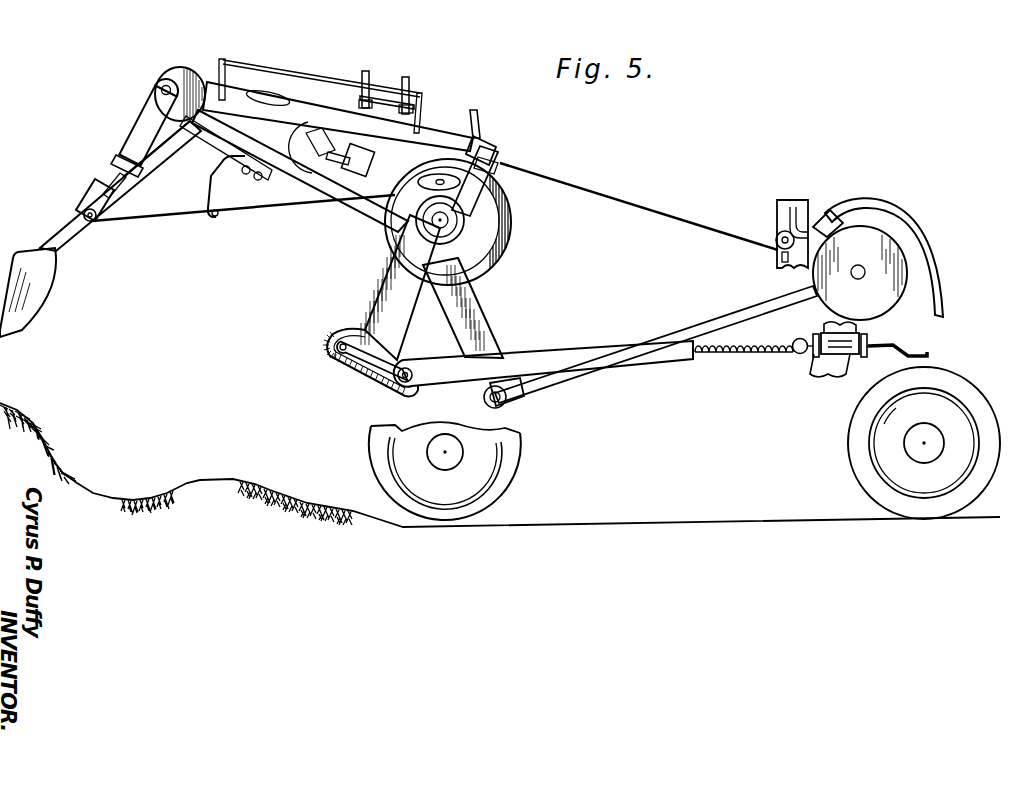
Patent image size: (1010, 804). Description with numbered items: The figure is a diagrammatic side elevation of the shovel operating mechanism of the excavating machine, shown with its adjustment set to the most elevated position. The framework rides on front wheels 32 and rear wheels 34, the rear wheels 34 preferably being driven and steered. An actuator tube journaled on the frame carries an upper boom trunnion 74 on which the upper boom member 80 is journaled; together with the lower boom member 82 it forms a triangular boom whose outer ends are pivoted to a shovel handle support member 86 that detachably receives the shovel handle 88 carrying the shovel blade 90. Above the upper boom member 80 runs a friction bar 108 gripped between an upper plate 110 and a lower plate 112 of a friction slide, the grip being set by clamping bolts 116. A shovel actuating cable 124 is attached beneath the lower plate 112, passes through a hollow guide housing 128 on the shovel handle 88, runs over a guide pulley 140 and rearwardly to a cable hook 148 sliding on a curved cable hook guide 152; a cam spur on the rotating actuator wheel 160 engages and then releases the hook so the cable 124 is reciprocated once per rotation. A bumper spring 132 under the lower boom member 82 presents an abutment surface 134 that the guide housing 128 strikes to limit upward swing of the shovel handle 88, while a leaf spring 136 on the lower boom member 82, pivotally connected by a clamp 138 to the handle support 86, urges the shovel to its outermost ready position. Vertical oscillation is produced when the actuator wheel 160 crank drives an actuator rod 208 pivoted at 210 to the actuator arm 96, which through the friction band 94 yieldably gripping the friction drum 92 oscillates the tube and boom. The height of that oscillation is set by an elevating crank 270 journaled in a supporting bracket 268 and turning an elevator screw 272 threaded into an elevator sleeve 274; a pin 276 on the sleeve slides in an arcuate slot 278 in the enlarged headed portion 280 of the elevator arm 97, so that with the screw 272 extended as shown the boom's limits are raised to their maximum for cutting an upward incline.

The front wheels 32 is at (510, 487).
The rear wheels 34 is at (867, 458).
The upper boom trunnion 74 is at (493, 185).
The upper boom member 80 is at (432, 134).
The lower boom member 82 is at (336, 206).
The shovel handle support member 86 is at (140, 122).
The shovel handle 88 is at (58, 228).
The shovel blade 90 is at (40, 290).
The friction drum 92 is at (486, 229).
The friction band 94 is at (513, 259).
The actuator arm 96 is at (486, 324).
The elevator arm 97 is at (382, 298).
The friction bar 108 is at (308, 80).
The upper plate 110 is at (377, 79).
The lower plate 112 is at (424, 99).
The clamping bolts 116 is at (411, 83).
The shovel actuating cable 124 is at (217, 222).
The guide housing 128 is at (101, 200).
The bumper spring 132 is at (214, 186).
The abutment surface 134 is at (249, 210).
The leaf spring 136 is at (168, 141).
The clamp 138 is at (118, 148).
The guide pulley 140 is at (410, 181).
The cable hook 148 is at (816, 226).
The cable hook guide 152 is at (895, 215).
The actuator wheel 160 is at (858, 233).
The actuator rod 208 is at (680, 333).
The pivoted end of actuator arm 210 is at (508, 404).
The supporting bracket 268 is at (814, 373).
The elevating crank 270 is at (884, 345).
The elevator screw 272 is at (733, 359).
The elevator sleeve 274 is at (642, 360).
The pin 276 is at (411, 388).
The arcuate slot 278 is at (328, 360).
The enlarged headed portion 280 is at (355, 374).